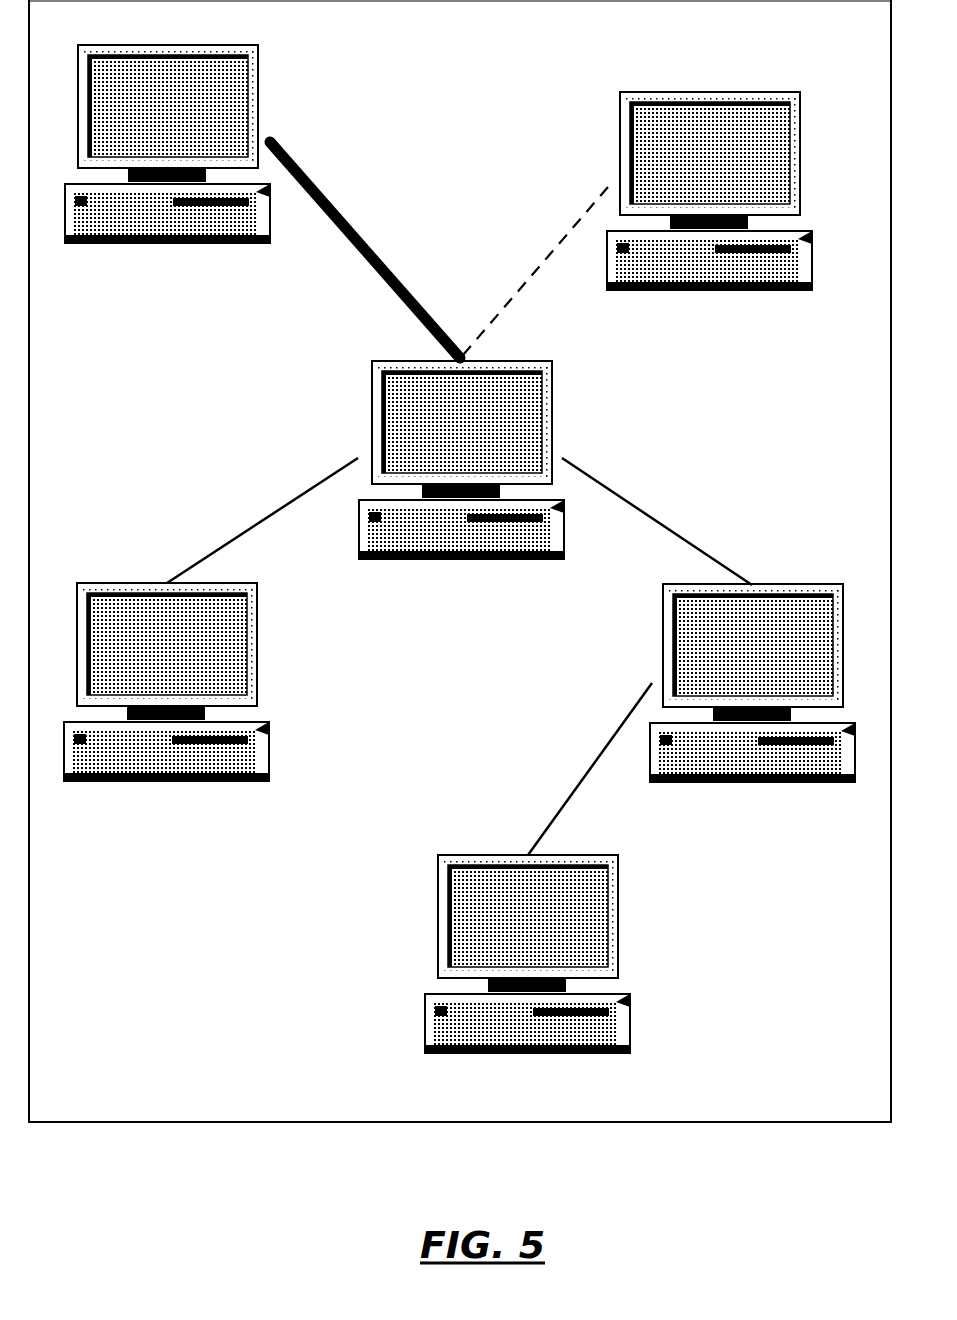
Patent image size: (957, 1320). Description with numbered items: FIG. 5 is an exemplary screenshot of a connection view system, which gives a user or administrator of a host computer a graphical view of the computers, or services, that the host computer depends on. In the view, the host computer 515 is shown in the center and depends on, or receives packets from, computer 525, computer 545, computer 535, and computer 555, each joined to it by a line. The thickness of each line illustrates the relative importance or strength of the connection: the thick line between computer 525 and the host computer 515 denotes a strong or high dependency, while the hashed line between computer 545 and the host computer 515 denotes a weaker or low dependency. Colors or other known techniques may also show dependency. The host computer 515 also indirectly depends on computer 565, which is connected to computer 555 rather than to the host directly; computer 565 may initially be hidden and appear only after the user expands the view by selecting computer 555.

The host computer 515 is at (461, 480).
The computer 525 is at (167, 164).
The computer 535 is at (166, 703).
The computer 545 is at (709, 211).
The computer 555 is at (752, 704).
The computer 565 is at (527, 974).